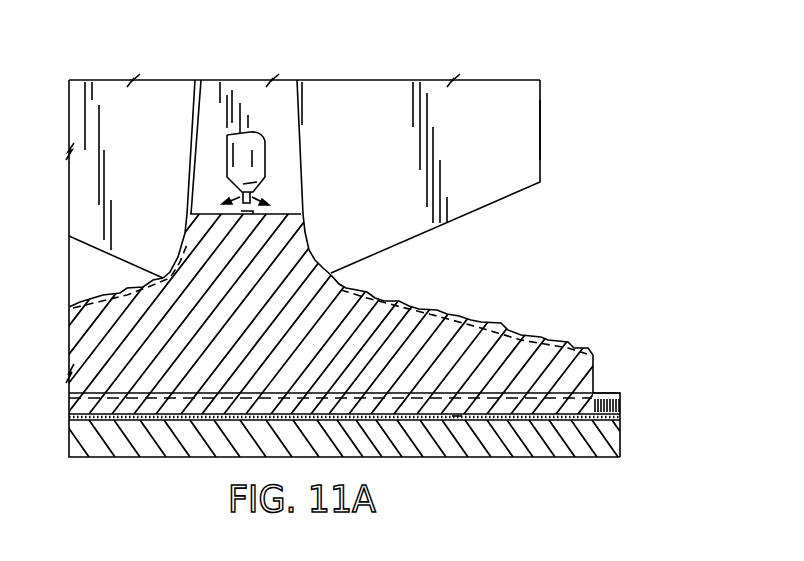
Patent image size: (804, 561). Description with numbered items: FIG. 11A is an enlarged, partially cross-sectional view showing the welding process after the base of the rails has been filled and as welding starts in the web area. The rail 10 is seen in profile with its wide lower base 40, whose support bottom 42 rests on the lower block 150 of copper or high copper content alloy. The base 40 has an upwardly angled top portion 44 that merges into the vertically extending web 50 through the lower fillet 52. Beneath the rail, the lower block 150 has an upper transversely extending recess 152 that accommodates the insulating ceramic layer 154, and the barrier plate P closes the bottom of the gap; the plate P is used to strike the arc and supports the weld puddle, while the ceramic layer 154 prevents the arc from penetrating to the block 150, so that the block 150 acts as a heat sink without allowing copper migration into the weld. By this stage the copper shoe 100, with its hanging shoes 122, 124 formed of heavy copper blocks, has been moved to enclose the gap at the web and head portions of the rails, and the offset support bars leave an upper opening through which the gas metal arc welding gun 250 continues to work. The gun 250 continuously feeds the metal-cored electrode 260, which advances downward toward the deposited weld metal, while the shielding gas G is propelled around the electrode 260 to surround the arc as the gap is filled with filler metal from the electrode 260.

The rail 10 is at (260, 77).
The hanging shoe 124 is at (153, 80).
The hanging shoe 122 is at (478, 80).
The copper shoe 100 is at (541, 128).
The web 50 is at (282, 152).
The gas metal arc welding gun 250 is at (264, 139).
The metal-cored electrode 260 is at (257, 195).
The shielding gas G is at (238, 195).
The lower fillet 52 is at (306, 245).
The base 40 is at (526, 335).
The upwardly angled top portion 44 is at (489, 321).
The support bottom 42 is at (518, 400).
The upper transversely extending recess 152 is at (605, 400).
The ceramic layer 154 is at (110, 418).
The lower block 150 is at (184, 456).
The barrier plate P is at (457, 414).